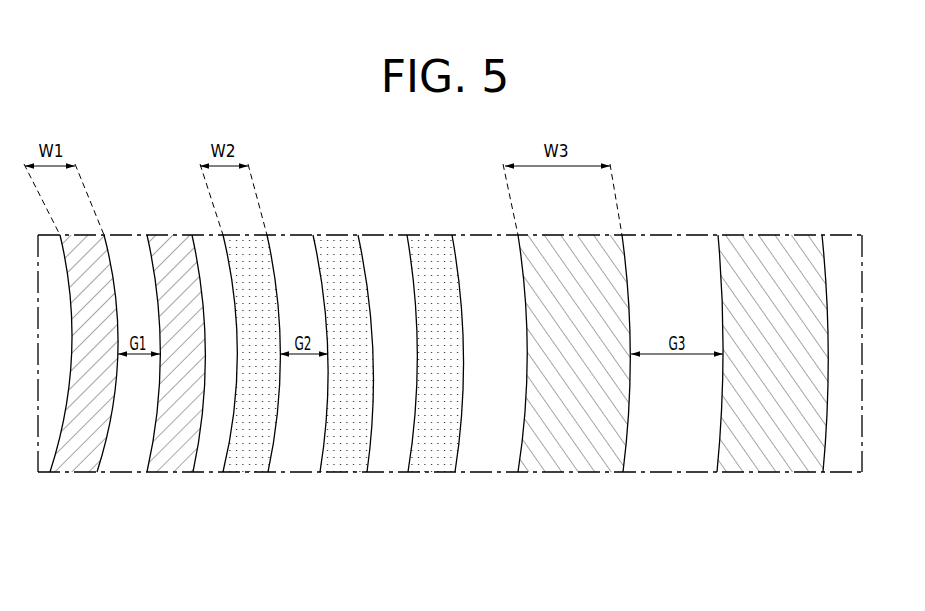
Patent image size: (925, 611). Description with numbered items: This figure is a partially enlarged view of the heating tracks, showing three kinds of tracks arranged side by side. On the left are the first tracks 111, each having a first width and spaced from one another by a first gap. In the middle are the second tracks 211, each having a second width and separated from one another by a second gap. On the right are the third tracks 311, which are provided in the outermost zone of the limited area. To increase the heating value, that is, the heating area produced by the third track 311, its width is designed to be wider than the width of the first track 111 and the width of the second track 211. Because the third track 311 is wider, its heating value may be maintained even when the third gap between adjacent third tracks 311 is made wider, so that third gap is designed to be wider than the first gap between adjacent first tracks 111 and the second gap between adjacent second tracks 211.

The first track 111 is at (170, 464).
The second track 211 is at (433, 458).
The third track 311 is at (764, 460).